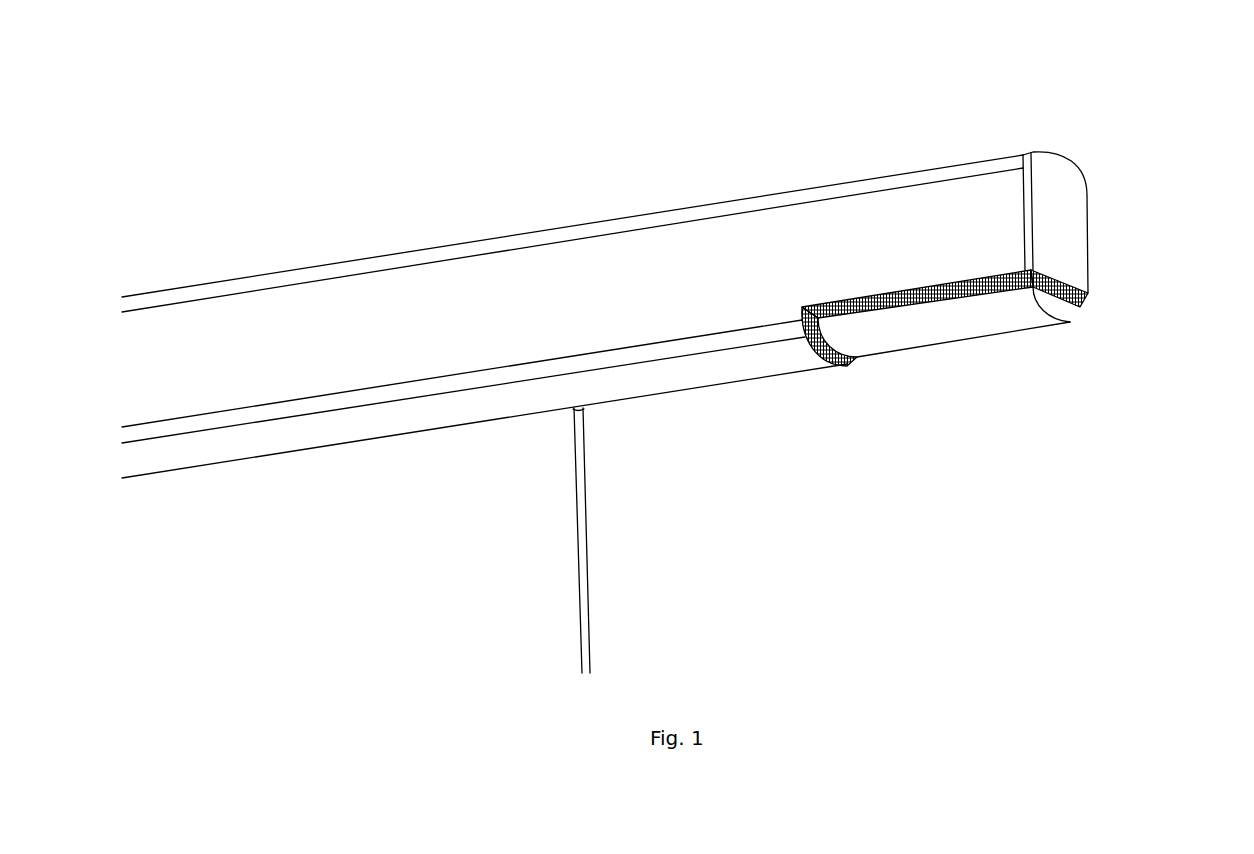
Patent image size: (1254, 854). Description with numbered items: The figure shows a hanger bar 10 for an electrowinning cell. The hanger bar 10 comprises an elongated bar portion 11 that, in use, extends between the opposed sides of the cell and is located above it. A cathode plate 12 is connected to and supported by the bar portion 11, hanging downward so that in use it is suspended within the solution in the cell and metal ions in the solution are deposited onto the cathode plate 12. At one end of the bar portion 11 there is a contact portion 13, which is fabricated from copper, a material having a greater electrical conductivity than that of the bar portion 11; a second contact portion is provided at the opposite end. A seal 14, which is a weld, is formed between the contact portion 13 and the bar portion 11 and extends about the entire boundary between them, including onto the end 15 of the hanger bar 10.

The hanger bar 10 is at (618, 198).
The bar portion 11 is at (740, 238).
The cathode plate 12 is at (528, 498).
The contact portion 13 is at (973, 320).
The seal 14 is at (900, 296).
The end 15 is at (1050, 212).